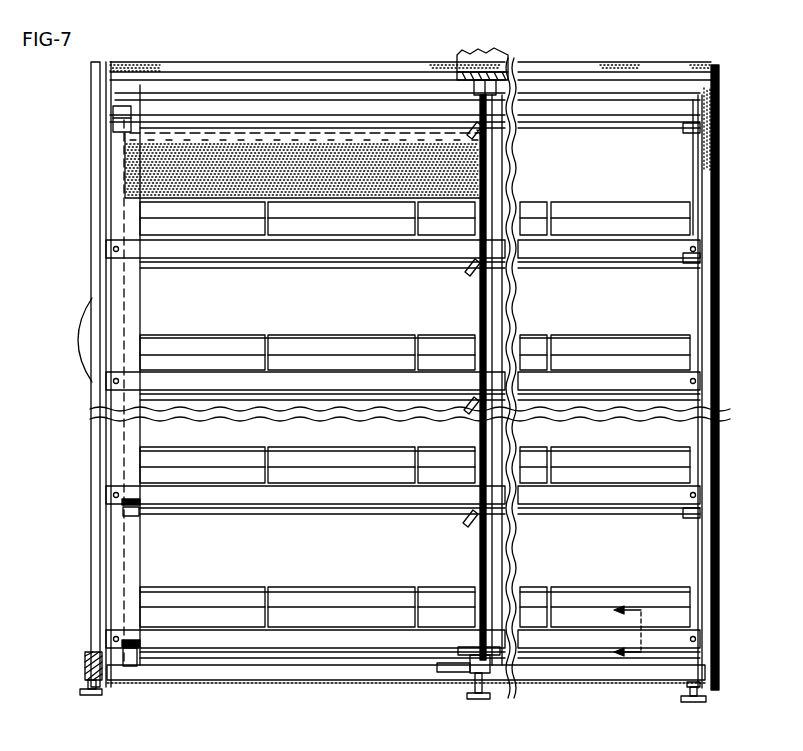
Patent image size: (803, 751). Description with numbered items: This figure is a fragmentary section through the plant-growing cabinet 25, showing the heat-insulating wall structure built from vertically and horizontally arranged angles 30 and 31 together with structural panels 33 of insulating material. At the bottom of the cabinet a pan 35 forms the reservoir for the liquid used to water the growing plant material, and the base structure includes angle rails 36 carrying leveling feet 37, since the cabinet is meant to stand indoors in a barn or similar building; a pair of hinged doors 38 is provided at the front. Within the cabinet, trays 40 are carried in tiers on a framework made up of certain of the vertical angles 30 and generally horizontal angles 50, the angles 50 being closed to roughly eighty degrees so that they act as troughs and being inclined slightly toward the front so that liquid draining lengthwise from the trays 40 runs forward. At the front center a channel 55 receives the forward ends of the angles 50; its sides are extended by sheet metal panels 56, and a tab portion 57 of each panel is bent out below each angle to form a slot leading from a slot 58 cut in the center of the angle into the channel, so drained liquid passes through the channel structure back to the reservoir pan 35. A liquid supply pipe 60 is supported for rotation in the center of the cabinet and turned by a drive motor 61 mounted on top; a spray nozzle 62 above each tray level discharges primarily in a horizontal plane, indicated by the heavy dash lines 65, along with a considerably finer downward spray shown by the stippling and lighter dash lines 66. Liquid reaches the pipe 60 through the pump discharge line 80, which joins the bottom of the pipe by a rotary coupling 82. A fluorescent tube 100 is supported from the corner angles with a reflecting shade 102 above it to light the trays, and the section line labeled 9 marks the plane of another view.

The cabinet 25 is at (238, 57).
The vertical angles 30 is at (693, 432).
The horizontal angles 31 is at (128, 64).
The structural panels 33 is at (193, 70).
The pan 35 is at (278, 687).
The angle rails 36 is at (86, 661).
The leveling feet 37 is at (90, 696).
The hinged doors 38 is at (100, 252).
The trays 40 is at (232, 350).
The horizontal angles 50 is at (290, 347).
The channel 55 is at (112, 197).
The sheet metal panels 56 is at (114, 452).
The tab portion 57 is at (136, 513).
The slot 58 is at (125, 499).
The liquid supply pipe 60 is at (487, 288).
The drive motor 61 is at (472, 54).
The spray nozzle 62 is at (478, 133).
The heavy dash lines 65 is at (345, 135).
The stippling and lighter dash lines 66 is at (382, 166).
The discharge line 80 is at (447, 668).
The rotary coupling 82 is at (475, 665).
The fluorescent tube 100 is at (573, 125).
The reflecting shade 102 is at (641, 115).
The section line 9- 9 is at (635, 633).